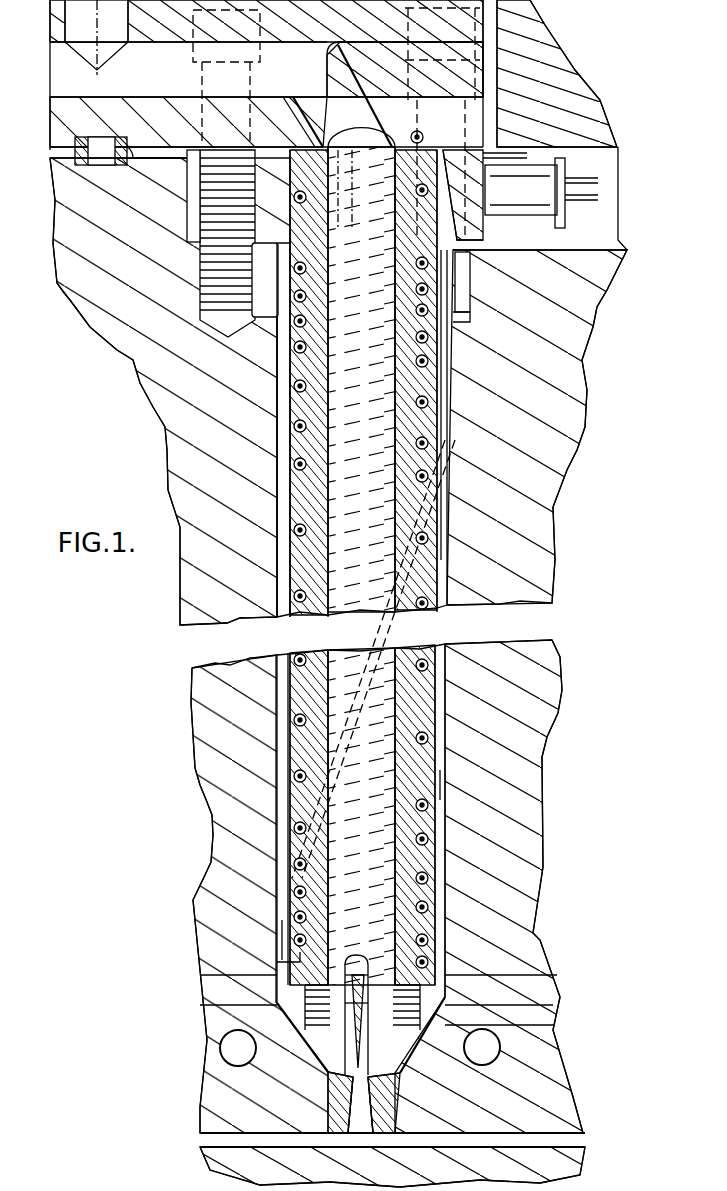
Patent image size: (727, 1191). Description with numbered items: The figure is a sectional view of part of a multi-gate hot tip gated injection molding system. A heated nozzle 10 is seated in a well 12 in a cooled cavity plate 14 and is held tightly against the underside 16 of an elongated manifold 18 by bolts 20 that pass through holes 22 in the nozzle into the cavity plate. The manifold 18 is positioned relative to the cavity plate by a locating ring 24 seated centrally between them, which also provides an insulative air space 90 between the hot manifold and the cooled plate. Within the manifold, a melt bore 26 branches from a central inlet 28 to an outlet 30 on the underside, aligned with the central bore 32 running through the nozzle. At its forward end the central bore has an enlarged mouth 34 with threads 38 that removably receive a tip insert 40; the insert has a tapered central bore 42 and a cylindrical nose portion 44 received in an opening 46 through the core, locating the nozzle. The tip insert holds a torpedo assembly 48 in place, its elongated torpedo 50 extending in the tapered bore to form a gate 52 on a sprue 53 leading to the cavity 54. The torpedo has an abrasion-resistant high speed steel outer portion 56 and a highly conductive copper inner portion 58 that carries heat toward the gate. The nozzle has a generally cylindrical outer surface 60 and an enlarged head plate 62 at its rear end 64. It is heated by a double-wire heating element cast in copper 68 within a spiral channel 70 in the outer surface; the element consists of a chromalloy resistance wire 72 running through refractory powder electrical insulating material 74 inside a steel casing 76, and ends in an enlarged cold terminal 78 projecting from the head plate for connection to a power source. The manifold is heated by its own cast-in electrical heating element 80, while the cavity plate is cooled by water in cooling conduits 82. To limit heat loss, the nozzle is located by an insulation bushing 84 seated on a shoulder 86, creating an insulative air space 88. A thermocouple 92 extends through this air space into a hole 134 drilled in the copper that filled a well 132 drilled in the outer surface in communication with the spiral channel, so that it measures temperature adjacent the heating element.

The nozzle 10 is at (427, 708).
The well 12 is at (440, 795).
The cavity plate 14 is at (517, 838).
The underside 16 is at (137, 167).
The manifold 18 is at (55, 100).
The bolts 20 is at (205, 272).
The holes 22 is at (200, 228).
The locating ring 24 is at (78, 137).
The melt bore 26 is at (176, 70).
The central inlet 28 is at (110, 18).
The outlet 30 is at (362, 140).
The central bore 32 is at (332, 503).
The enlarged mouth 34 is at (440, 1080).
The threads 38 is at (440, 1007).
The tip insert 40 is at (440, 1023).
The tapered central bore 42 is at (337, 1040).
The cylindrical nose portion 44 is at (387, 1092).
The opening 46 is at (383, 1120).
The torpedo assembly 48 is at (440, 993).
The torpedo 50 is at (370, 958).
The gate 52 is at (332, 1095).
The sprue 53 is at (360, 1120).
The cavity 54 is at (220, 1140).
The outer portion 56 is at (352, 978).
The inner portion 58 is at (362, 1003).
The outer surface 60 is at (445, 562).
The head plate 62 is at (197, 193).
The rear end 64 is at (308, 100).
The copper 68 is at (433, 672).
The spiral channel 70 is at (433, 738).
The chromalloy resistance wire 72 is at (450, 403).
The refractory powder electrical insulating material 74 is at (440, 365).
The steel casing 76 is at (443, 463).
The cold terminal 78 is at (540, 193).
The electrical heating element 80 is at (430, 132).
The cooling conduits 82 is at (217, 1050).
The insulation bushing 84 is at (473, 280).
The shoulder 86 is at (473, 307).
The insulative air space 88 is at (447, 513).
The insulative air space 90 is at (130, 147).
The thermocouple 92 is at (274, 922).
The well 132 is at (283, 958).
The hole 134 is at (272, 940).